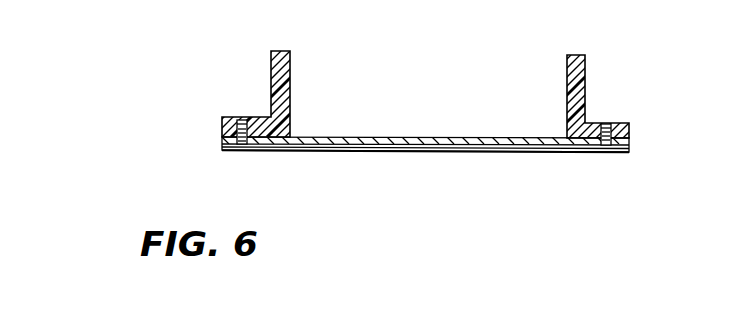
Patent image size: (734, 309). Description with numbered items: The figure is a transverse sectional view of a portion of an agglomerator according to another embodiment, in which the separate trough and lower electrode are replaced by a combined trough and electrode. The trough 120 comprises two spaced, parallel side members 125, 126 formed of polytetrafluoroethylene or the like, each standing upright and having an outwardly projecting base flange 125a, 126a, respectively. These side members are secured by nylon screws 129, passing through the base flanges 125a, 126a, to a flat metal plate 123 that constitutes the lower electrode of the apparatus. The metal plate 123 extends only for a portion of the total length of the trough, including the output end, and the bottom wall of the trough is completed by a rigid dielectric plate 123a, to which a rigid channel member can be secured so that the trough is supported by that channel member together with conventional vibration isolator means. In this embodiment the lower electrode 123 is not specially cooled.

The trough 120 is at (445, 101).
The flat metal plate 123 is at (388, 143).
The rigid dielectric plate 123a is at (517, 150).
The side member 125 is at (284, 50).
The base flange 125a is at (222, 126).
The side member 126 is at (577, 55).
The base flange 126a is at (629, 130).
The nylon screws 129 is at (241, 120).